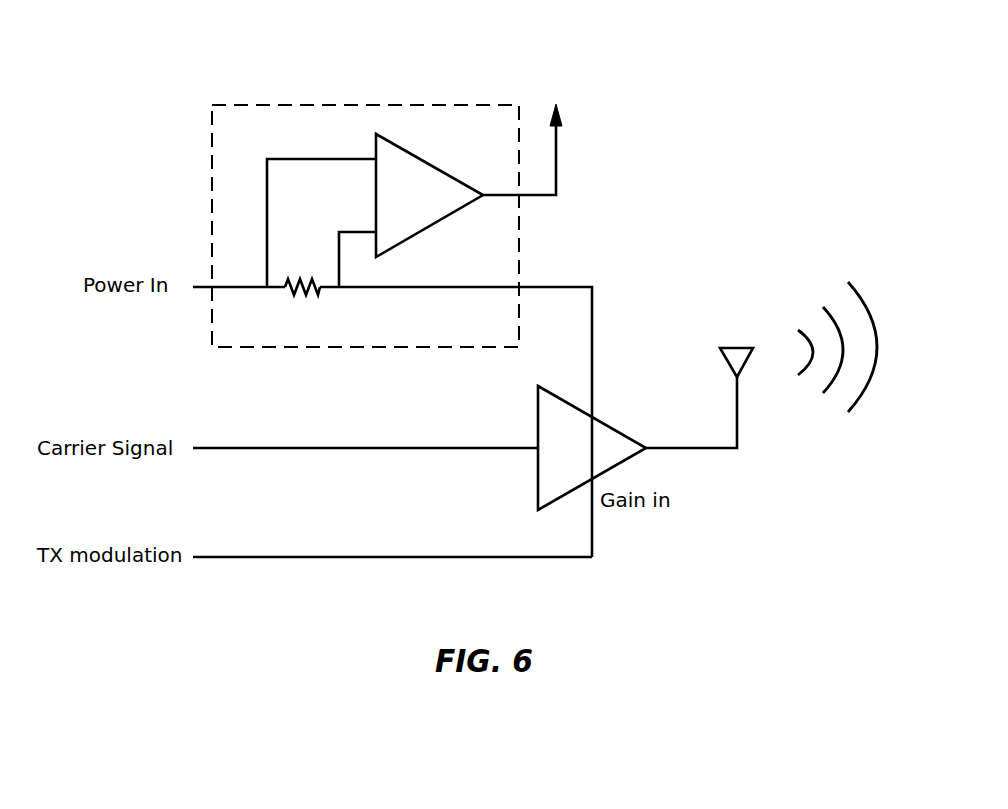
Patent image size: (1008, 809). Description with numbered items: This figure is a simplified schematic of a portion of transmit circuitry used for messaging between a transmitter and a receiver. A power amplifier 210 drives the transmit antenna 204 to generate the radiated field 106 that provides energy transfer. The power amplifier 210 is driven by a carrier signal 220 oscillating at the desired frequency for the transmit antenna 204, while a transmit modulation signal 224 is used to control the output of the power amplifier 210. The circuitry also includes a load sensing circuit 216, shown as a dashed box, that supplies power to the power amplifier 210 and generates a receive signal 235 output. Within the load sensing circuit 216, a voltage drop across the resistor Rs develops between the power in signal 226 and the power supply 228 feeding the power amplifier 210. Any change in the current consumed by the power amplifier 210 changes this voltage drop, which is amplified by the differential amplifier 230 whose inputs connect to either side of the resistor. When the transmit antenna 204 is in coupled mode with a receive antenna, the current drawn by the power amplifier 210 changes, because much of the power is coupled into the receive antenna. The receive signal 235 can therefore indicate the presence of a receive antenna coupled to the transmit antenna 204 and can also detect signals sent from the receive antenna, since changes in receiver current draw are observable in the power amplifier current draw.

The radiated field 106 is at (829, 273).
The transmit antenna 204 is at (722, 352).
The power amplifier 210 is at (612, 428).
The load sensing circuit 216 is at (337, 105).
The carrier signal 220 is at (249, 446).
The transmit modulation signal 224 is at (275, 555).
The power in signal 226 is at (258, 288).
The power supply 228 is at (393, 288).
The differential amplifier 230 is at (445, 218).
The receive signal 235 is at (557, 158).